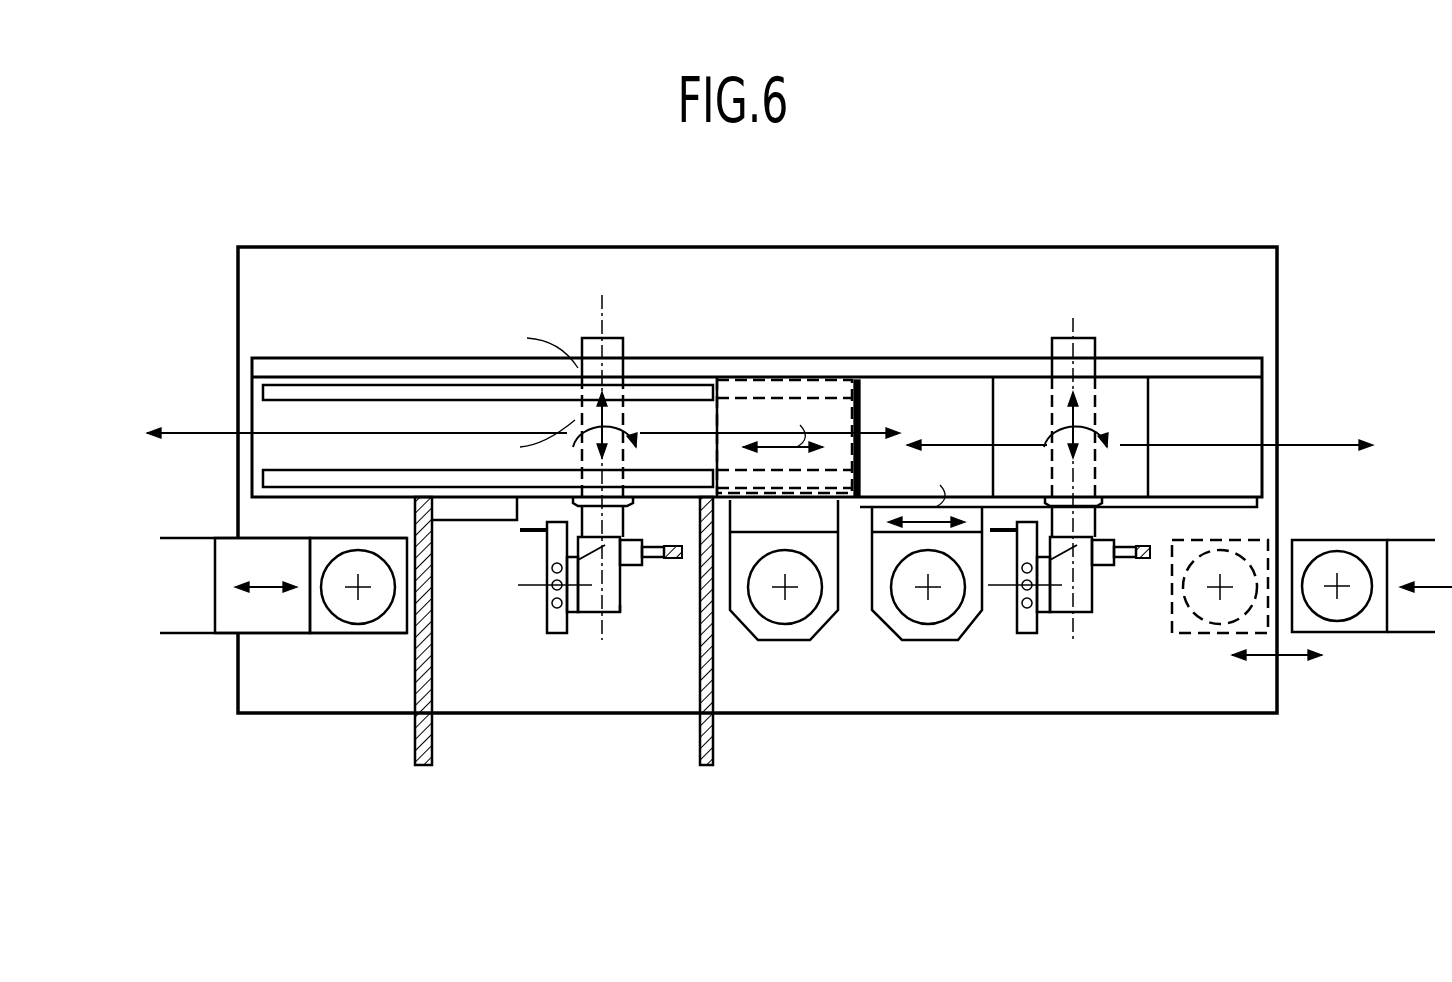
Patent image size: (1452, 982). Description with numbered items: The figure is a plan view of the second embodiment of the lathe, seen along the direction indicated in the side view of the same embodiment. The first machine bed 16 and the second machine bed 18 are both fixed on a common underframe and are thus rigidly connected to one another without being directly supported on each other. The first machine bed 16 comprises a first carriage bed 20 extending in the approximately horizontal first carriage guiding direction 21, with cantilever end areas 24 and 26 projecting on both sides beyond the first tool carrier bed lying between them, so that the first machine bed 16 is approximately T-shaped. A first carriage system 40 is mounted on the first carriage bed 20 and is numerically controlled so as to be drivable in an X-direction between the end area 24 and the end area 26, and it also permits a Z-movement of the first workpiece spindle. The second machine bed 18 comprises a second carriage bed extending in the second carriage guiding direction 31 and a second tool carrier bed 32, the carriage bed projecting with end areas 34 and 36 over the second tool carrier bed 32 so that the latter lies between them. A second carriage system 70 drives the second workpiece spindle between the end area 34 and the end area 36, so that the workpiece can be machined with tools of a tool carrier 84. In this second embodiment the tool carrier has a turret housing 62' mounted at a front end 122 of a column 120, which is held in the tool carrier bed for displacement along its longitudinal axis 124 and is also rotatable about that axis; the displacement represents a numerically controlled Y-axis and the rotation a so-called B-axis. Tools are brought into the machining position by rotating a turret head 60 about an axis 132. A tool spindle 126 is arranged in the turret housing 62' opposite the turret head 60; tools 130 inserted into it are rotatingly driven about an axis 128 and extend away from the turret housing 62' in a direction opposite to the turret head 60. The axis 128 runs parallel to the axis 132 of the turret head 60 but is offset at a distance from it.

The first machine bed 16 is at (340, 340).
The second machine bed 18 is at (1158, 520).
The first carriage bed 20 is at (412, 420).
The first carriage guiding direction 21 is at (193, 433).
The cantilever end area 24 is at (312, 438).
The cantilever end area 26 is at (865, 405).
The second carriage guiding direction 31 is at (1312, 443).
The second tool carrier bed 32 is at (1110, 390).
The end area 34 is at (930, 405).
The end area 36 is at (1203, 435).
The first carriage system 40 is at (836, 639).
The turret head 60 is at (543, 587).
The turret housing 62' is at (629, 722).
The second carriage system 70 is at (971, 653).
The tool carrier 84 is at (1090, 630).
The column 120 is at (580, 340).
The front end 122 is at (583, 540).
The longitudinal axis 124 is at (595, 305).
The tool spindle 126 is at (632, 560).
The axis 128 is at (653, 560).
The tools 130 is at (672, 560).
The axis 132 is at (543, 600).